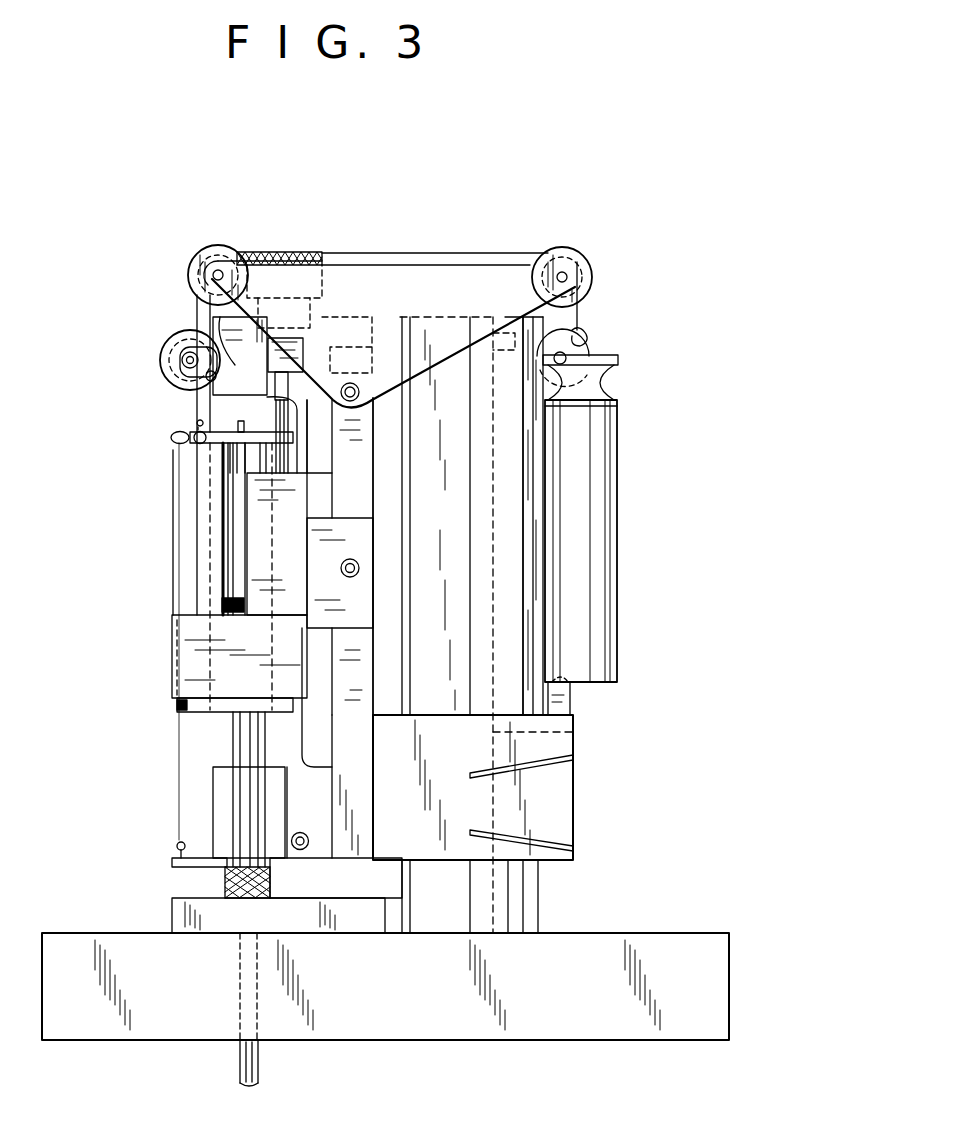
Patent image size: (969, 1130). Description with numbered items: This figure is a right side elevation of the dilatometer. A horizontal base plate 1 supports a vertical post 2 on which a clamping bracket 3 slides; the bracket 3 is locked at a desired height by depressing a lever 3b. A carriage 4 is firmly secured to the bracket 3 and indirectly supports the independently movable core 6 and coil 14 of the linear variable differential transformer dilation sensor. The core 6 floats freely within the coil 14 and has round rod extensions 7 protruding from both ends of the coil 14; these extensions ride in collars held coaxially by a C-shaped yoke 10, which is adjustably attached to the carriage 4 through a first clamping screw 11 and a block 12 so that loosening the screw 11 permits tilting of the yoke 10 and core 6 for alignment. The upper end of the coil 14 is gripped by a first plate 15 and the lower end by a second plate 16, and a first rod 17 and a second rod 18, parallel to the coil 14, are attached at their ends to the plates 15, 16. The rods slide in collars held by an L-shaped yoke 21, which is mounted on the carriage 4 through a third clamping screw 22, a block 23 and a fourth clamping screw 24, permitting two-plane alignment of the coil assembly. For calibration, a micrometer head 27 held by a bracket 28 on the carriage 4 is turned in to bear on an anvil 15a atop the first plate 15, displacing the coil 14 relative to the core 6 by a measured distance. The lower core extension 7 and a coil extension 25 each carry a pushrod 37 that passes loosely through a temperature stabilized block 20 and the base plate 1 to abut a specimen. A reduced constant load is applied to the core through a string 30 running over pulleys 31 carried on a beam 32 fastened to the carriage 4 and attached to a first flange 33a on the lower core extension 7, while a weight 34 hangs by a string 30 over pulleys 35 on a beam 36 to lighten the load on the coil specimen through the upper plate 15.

The base plate 1 is at (470, 1032).
The post 2 is at (520, 887).
The clamping bracket 3 is at (550, 797).
The lever 3b is at (560, 690).
The carriage 4 is at (355, 652).
The core 6 is at (205, 497).
The round rod extensions 7 is at (282, 418).
The C-shaped yoke 10 is at (313, 752).
The first clamping screw 11 is at (298, 850).
The block 12 is at (317, 838).
The coil 14 is at (208, 477).
The first plate 15 is at (178, 437).
The anvil 15a is at (240, 422).
The second plate 16 is at (220, 705).
The first rod 17 is at (293, 462).
The second rod 18 is at (243, 462).
The temperature stabilized block 20 is at (180, 910).
The L-shaped yoke 21 is at (185, 662).
The third clamping screw 22 is at (225, 604).
The block 23 is at (355, 537).
The fourth clamping screw 24 is at (362, 568).
The coil extension 25 is at (242, 740).
The micrometer head 27 is at (318, 253).
The bracket 28 is at (318, 333).
The string 30 is at (197, 313).
The pulleys 31 is at (170, 352).
The beam 32 is at (206, 376).
The first flange 33a is at (200, 868).
The weight 34 is at (600, 425).
The pulleys 35 is at (196, 256).
The beam 36 is at (432, 270).
The pushrod 37 is at (237, 990).